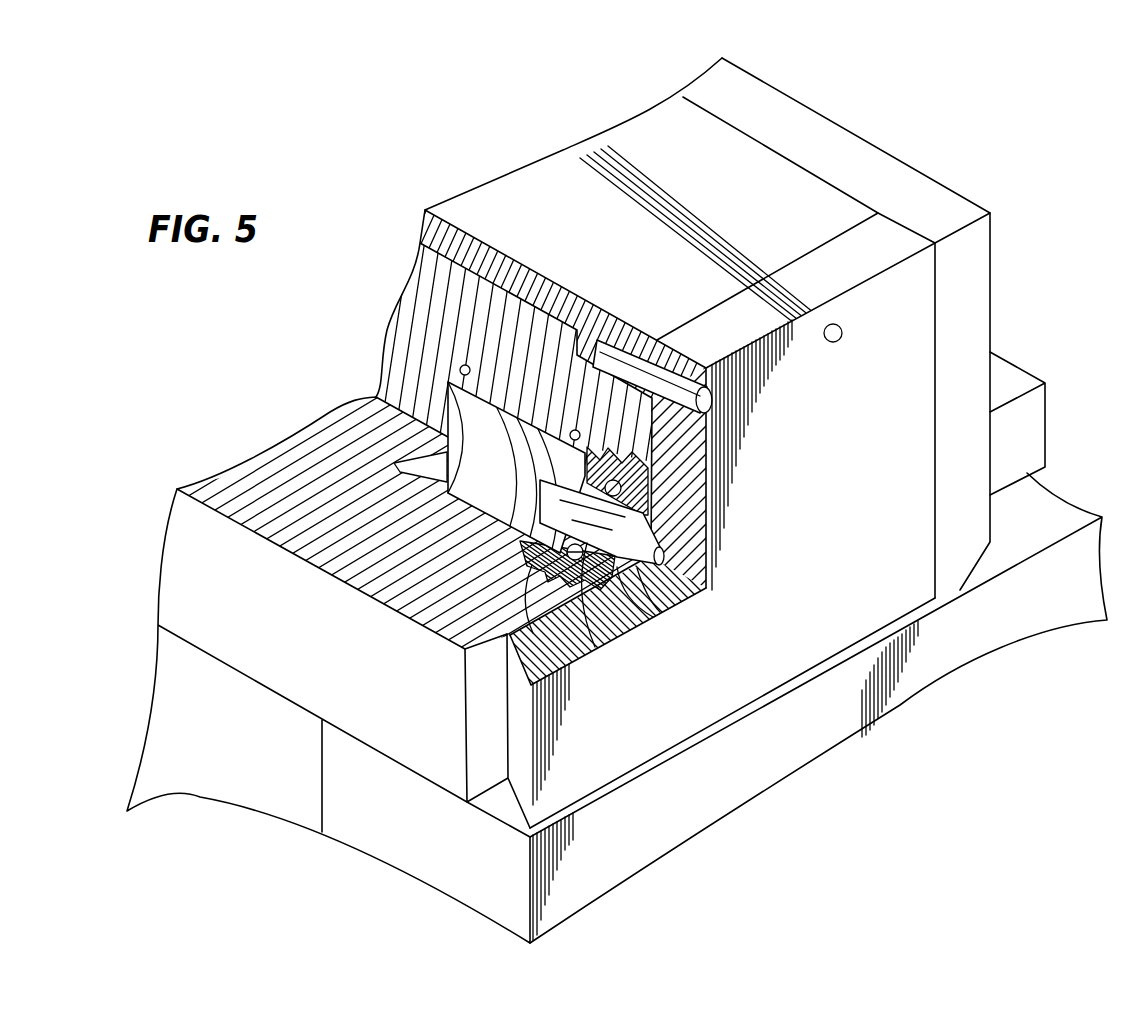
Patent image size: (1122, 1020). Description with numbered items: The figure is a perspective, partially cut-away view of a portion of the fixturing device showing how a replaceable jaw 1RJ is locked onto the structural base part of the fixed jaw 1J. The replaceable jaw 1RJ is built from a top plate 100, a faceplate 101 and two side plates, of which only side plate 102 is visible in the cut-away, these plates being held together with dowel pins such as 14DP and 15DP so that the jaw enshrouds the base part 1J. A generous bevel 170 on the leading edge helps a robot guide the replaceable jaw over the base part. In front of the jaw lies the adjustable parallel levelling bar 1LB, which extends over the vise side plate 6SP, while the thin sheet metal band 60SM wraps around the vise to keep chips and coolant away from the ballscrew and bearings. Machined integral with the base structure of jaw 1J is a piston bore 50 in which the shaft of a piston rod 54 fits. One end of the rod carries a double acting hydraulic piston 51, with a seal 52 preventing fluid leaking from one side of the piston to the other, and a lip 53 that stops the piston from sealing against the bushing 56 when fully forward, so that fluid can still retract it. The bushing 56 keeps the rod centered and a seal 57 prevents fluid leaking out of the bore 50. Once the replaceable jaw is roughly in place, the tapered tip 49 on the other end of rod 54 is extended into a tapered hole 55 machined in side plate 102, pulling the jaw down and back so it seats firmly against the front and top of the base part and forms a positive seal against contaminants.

The replaceable jaw 1RJ is at (559, 140).
The top plate 100 is at (465, 190).
The faceplate 101 is at (850, 130).
The side plate 102 is at (905, 292).
The dowel pin 15DP is at (839, 340).
The dowel pin 14DP is at (712, 404).
The levelling bar 1LB is at (1045, 438).
The side plate 6SP is at (1027, 637).
The sheet metal band 60SM is at (156, 700).
The bevel 170 is at (520, 783).
The fixed jaw 1J is at (393, 318).
The piston bore 50 is at (450, 395).
The double acting hydraulic piston 51 is at (372, 400).
The seal 52 is at (445, 447).
The lip 53 is at (542, 486).
The piston rod 54 is at (632, 512).
The tapered hole 55 is at (667, 562).
The tapered tip 49 is at (641, 580).
The seal 57 is at (594, 645).
The bushing 56 is at (557, 655).